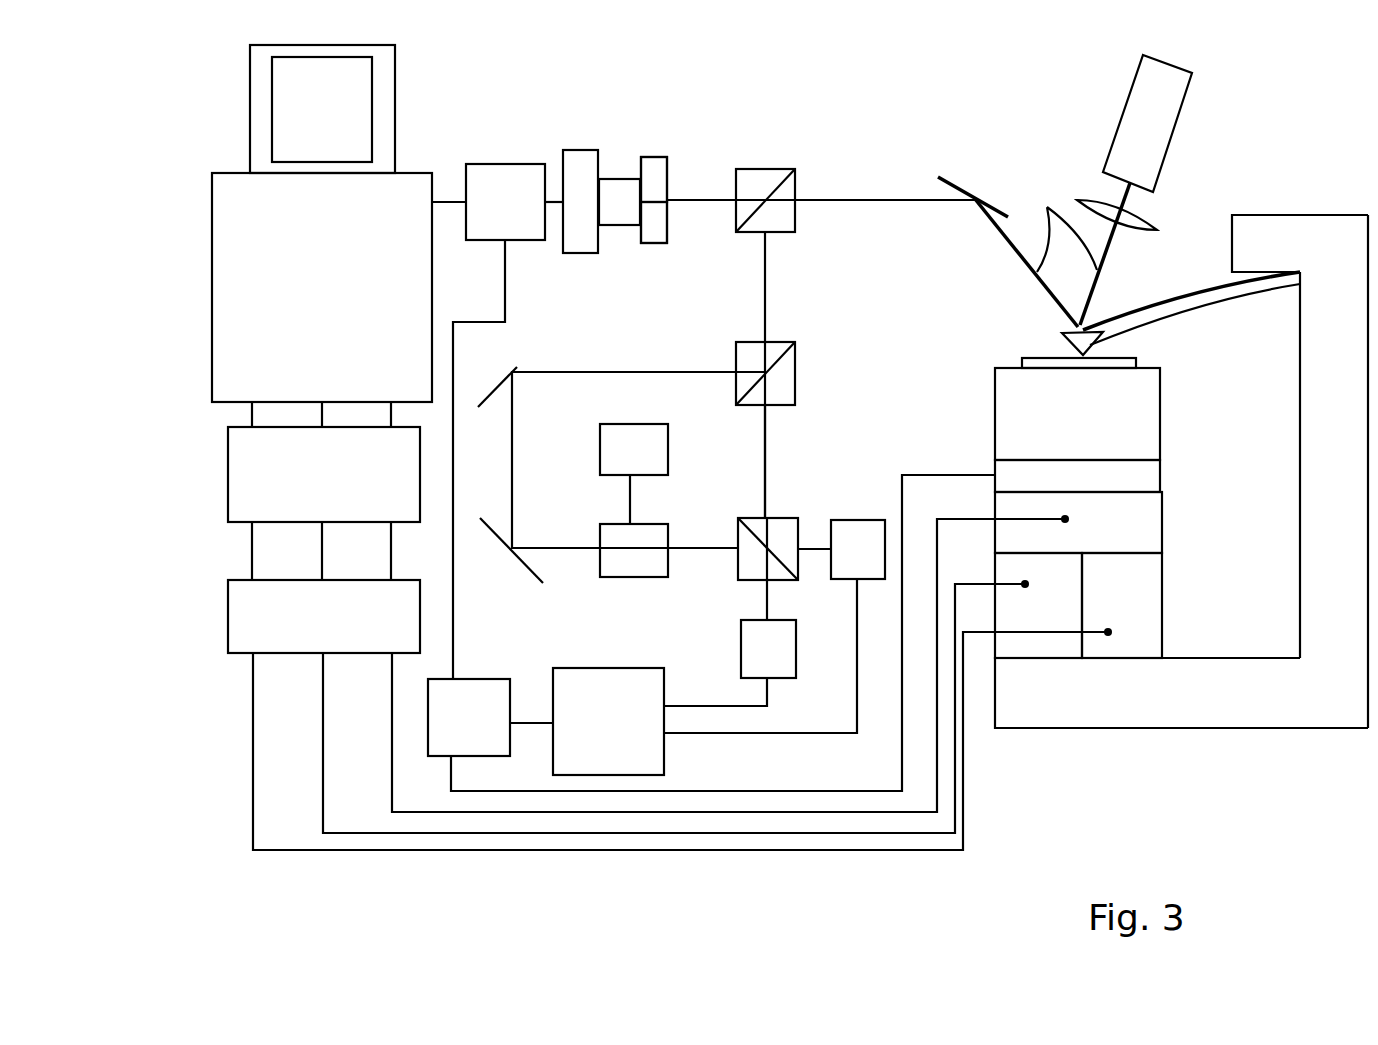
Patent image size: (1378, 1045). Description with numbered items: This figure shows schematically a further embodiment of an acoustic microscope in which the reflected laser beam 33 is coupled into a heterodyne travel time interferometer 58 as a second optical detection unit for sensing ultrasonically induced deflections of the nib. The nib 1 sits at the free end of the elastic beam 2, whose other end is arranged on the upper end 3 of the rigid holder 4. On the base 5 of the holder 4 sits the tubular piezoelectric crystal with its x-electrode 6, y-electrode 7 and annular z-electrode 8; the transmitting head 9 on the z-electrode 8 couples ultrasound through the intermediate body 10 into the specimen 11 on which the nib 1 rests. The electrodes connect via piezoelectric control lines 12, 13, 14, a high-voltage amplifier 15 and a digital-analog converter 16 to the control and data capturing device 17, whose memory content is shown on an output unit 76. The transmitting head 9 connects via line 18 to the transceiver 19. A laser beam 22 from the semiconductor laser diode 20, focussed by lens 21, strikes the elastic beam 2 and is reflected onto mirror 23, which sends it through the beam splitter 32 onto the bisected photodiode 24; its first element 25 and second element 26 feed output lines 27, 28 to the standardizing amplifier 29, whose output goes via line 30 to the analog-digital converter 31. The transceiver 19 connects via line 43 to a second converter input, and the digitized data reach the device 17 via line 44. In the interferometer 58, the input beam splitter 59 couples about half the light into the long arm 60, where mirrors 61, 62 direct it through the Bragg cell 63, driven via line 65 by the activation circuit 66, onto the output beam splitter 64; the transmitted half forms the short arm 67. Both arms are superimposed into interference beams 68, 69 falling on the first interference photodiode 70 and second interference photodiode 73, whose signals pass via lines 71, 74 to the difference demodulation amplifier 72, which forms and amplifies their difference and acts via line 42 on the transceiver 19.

The nib 1 is at (1087, 343).
The elastic beam 2 is at (1220, 288).
The upper end of holder 3 is at (1263, 213).
The holder 4 is at (1344, 499).
The base of holder 5 is at (1157, 732).
The x-electrode 6 is at (1124, 609).
The y-electrode 7 is at (1057, 609).
The z-electrode 8 is at (1122, 539).
The transmitting head 9 is at (1140, 477).
The intermediate body 10 is at (1092, 429).
The specimen 11 is at (1043, 360).
The piezoelectric control line 12 is at (550, 850).
The piezoelectric control line 13 is at (655, 833).
The piezoelectric control line 14 is at (752, 812).
The high-voltage amplifier 15 is at (339, 633).
The digital-analog converter 16 is at (339, 495).
The control and data capturing device 17 is at (332, 302).
The line 18 is at (855, 792).
The transceiver 19 is at (482, 734).
The semiconductor laser diode 20 is at (1169, 131).
The lens 21 is at (1100, 205).
The laser beam 22 is at (1047, 207).
The mirror 23 is at (953, 185).
The bisected photodiode 24 is at (653, 180).
The first element 25 is at (655, 185).
The second element 26 is at (655, 222).
The output line 27 is at (613, 177).
The output line 28 is at (620, 226).
The standardizing amplifier 29 is at (578, 192).
The line 30 is at (553, 198).
The analog-digital converter 31 is at (515, 217).
The beam splitter 32 is at (753, 183).
The reflected laser beam 33 is at (766, 290).
The line 42 is at (528, 705).
The line 43 is at (505, 278).
The line 44 is at (446, 200).
The heterodyne travel time interferometer 58 is at (820, 430).
The input beam splitter 59 is at (785, 378).
The long arm 60 is at (667, 372).
The mirror 61 is at (528, 354).
The mirror 62 is at (537, 572).
The Bragg cell 63 is at (647, 537).
The output beam splitter 64 is at (787, 532).
The line 65 is at (630, 498).
The activation circuit 66 is at (651, 467).
The short arm 67 is at (765, 467).
The first interference beam 68 is at (767, 595).
The second interference beam 69 is at (808, 545).
The first interference photodiode 70 is at (785, 667).
The line 71 is at (720, 705).
The difference demodulation amplifier 72 is at (625, 729).
The second interference photodiode 73 is at (875, 567).
The line 74 is at (850, 655).
The output unit 76 is at (337, 124).